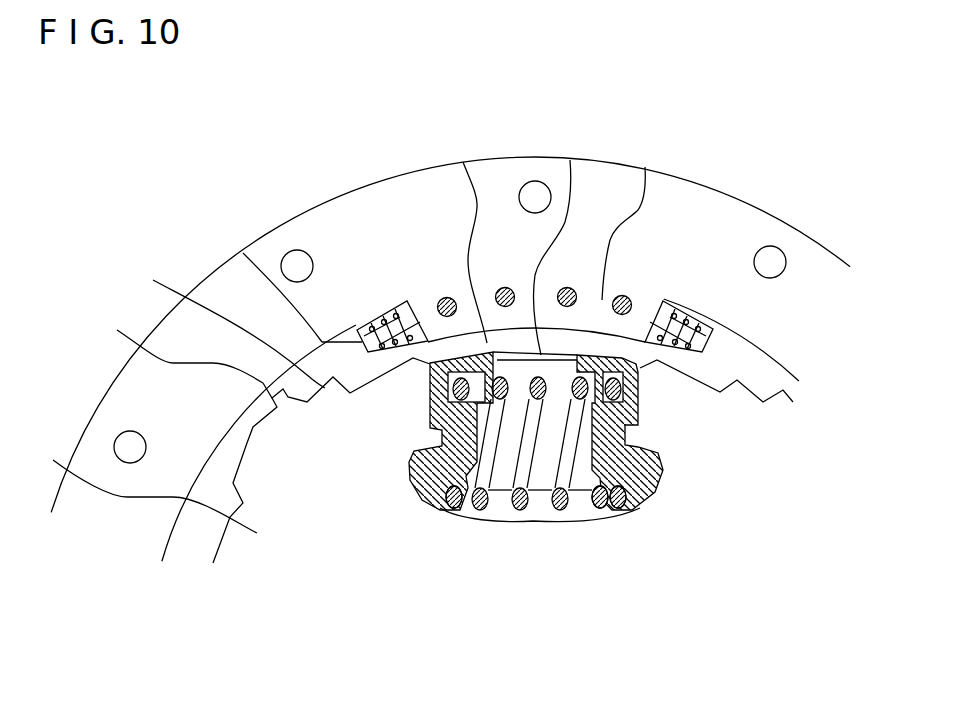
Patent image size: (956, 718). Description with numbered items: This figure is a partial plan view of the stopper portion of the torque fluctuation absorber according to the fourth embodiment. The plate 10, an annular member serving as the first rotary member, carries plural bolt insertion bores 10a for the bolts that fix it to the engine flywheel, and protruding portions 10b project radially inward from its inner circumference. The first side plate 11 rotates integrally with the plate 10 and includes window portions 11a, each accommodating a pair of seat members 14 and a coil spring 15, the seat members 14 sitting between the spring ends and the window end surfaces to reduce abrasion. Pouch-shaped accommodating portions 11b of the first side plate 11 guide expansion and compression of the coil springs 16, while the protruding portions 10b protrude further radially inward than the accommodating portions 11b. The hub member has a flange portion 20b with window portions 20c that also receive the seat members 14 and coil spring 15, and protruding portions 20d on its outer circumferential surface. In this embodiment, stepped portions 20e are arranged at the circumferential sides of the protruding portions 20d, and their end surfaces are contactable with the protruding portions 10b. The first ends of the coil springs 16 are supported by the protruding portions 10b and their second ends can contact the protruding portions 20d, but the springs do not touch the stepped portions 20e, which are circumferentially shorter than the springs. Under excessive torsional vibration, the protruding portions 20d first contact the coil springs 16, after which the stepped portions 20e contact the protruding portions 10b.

The plate 10 is at (120, 408).
The bolt insertion bores 10a is at (807, 232).
The protruding portions 10b is at (645, 167).
The first side plate 11 is at (463, 162).
The window portions 11a is at (570, 160).
The accommodating portions 11b is at (243, 253).
The seat members 14 is at (437, 480).
The coil spring 15 is at (560, 511).
The coil springs 16 is at (377, 317).
The flange portion 20b is at (132, 489).
The window portions 20c is at (523, 520).
The protruding portions 20d is at (174, 437).
The stepped portions 20e is at (452, 329).